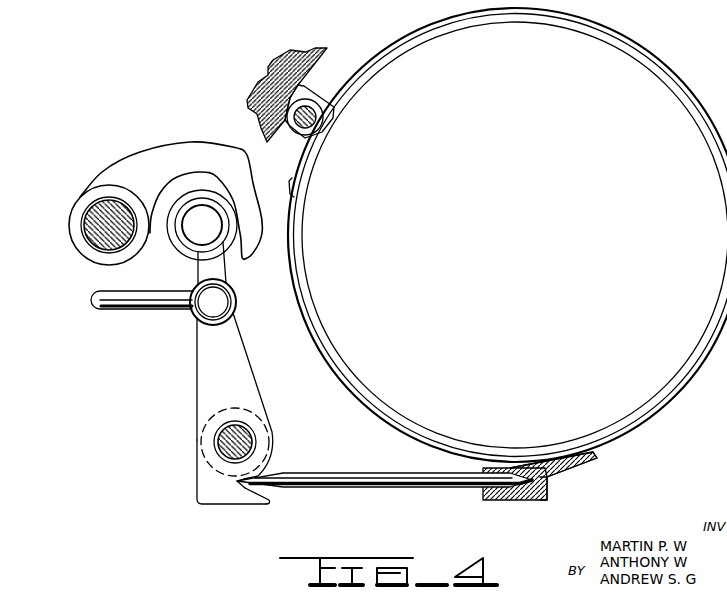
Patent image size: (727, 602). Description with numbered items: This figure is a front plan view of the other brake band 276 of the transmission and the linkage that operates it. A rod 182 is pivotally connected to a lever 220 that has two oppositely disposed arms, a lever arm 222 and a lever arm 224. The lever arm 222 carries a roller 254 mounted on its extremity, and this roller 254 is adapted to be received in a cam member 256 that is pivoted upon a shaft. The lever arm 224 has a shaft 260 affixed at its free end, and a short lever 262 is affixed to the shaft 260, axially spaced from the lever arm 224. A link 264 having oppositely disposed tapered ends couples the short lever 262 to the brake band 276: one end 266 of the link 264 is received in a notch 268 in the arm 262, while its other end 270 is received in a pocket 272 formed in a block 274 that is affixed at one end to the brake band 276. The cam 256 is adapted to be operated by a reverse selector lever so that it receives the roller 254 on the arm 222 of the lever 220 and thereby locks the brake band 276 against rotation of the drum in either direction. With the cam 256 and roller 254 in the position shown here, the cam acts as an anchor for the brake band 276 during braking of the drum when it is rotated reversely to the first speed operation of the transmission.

The rod 182 is at (125, 297).
The lever 220 is at (230, 412).
The lever arm 222 is at (213, 272).
The lever arm 224 is at (208, 386).
The roller 254 is at (177, 236).
The cam member 256 is at (140, 158).
The shaft 260 is at (243, 445).
The short lever 262 is at (220, 497).
The link 264 is at (357, 477).
The end of link 266 is at (273, 487).
The notch 268 is at (257, 497).
The other end of link 270 is at (542, 467).
The pocket 272 is at (493, 463).
The block 274 is at (548, 498).
The brake band 276 is at (648, 424).